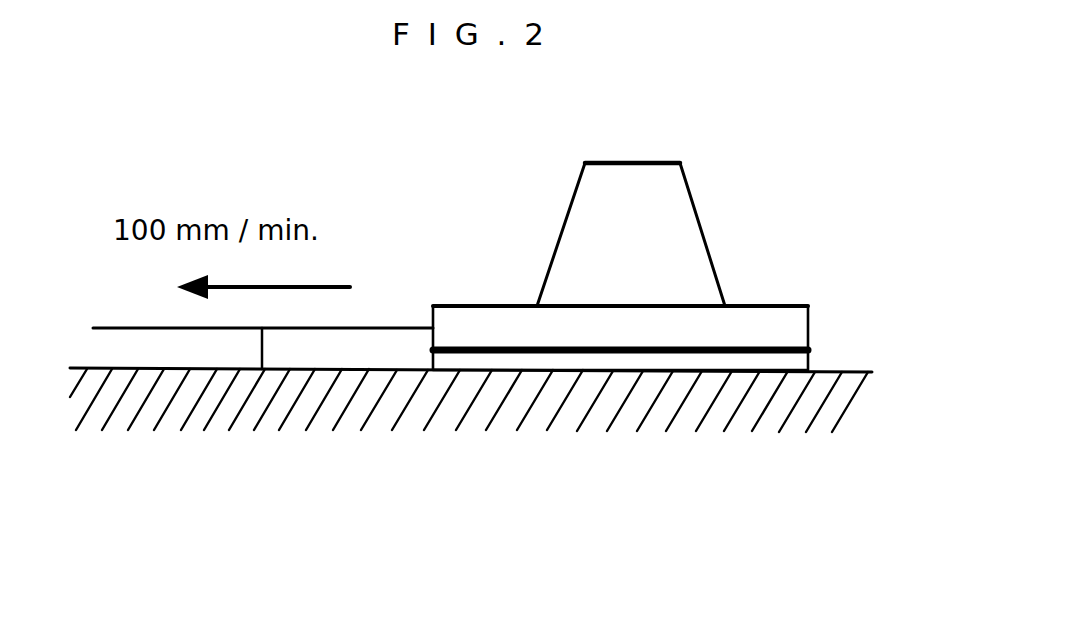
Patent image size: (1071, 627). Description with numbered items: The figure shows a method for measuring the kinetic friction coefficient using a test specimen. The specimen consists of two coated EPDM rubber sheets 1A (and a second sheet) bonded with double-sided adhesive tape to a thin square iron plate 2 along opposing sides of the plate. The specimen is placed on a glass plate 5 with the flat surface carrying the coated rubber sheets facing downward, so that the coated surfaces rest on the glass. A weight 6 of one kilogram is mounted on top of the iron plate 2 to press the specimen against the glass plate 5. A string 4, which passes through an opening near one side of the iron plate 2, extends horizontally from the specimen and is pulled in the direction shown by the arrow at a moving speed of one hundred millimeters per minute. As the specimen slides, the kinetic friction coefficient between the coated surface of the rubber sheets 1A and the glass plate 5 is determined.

The EPDM rubber sheet 1A is at (613, 296).
The iron plate 2 is at (757, 332).
The string 4 is at (278, 330).
The glass plate 5 is at (742, 413).
The weight 6 is at (637, 188).